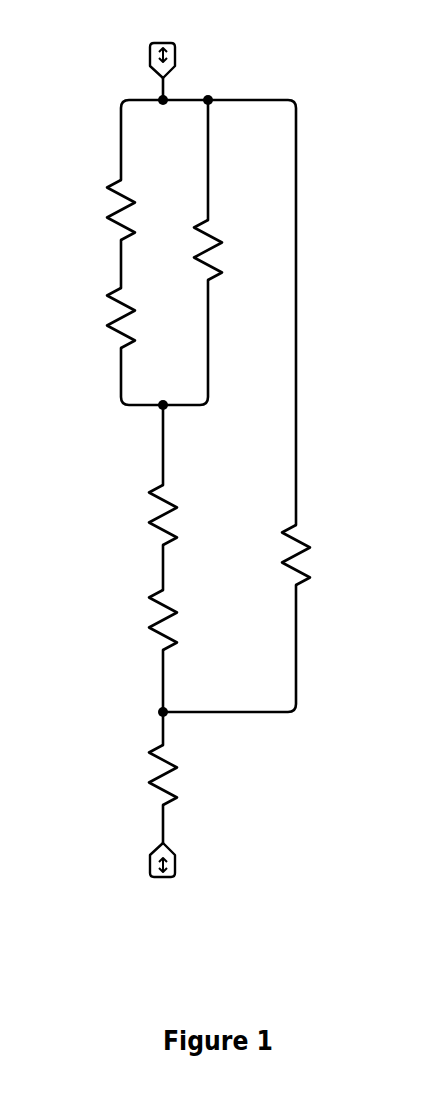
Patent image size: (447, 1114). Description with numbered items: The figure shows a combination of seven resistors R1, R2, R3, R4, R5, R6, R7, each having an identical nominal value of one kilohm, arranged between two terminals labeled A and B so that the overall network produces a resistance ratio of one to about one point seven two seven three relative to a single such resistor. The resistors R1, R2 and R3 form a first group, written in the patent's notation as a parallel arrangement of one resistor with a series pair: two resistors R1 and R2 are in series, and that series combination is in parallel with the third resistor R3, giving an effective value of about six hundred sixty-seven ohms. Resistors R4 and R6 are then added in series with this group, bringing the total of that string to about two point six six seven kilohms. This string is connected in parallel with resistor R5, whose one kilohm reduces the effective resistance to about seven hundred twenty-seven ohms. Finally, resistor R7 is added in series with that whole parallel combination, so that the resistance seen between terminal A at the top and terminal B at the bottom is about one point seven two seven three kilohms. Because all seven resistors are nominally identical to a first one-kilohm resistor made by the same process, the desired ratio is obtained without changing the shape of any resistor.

The resistor R1 is at (122, 208).
The resistor R2 is at (209, 250).
The resistor R3 is at (122, 316).
The resistor R4 is at (164, 514).
The resistor R5 is at (297, 554).
The resistor R6 is at (164, 619).
The resistor R7 is at (164, 774).
The terminal A is at (162, 49).
The terminal B is at (162, 873).